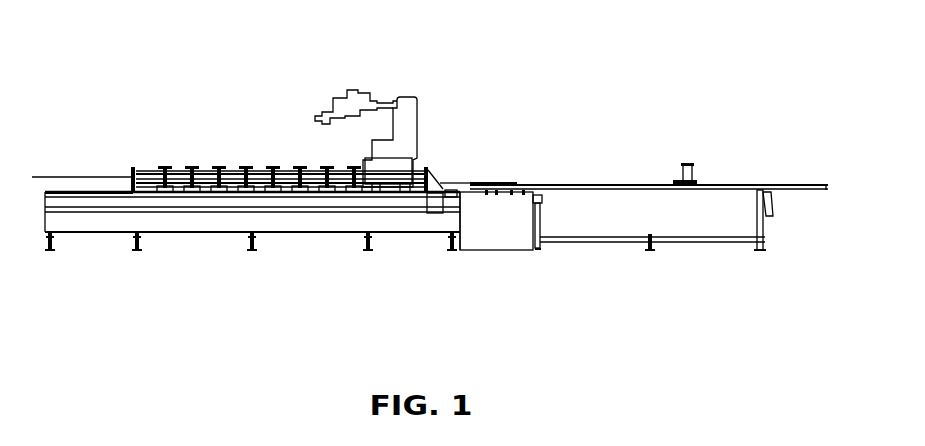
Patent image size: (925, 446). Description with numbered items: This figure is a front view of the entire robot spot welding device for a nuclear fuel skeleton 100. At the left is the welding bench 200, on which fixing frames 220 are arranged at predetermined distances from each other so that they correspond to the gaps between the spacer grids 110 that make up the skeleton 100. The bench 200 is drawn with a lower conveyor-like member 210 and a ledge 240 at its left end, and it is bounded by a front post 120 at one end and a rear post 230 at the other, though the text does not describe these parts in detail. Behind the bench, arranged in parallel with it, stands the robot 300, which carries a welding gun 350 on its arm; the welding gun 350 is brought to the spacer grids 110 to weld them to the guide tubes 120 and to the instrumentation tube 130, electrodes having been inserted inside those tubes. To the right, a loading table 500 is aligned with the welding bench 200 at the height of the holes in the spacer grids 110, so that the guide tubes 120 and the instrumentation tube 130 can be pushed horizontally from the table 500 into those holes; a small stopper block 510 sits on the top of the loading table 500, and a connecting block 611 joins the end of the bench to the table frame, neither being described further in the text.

The skeleton 100 is at (186, 152).
The spacer grids 110 is at (280, 170).
The guide tubes 120 is at (152, 168).
The instrumentation tube 130 is at (238, 168).
The welding bench 200 is at (118, 103).
The conveyor 210 is at (72, 192).
The fixing frames 220 is at (275, 168).
The rear post 230 is at (432, 167).
The ledge 240 is at (130, 168).
The robot 300 is at (410, 70).
The welding gun 350 is at (348, 92).
The loading table 500 is at (595, 146).
The stopper 510 is at (692, 177).
The connecting block 611 is at (440, 215).